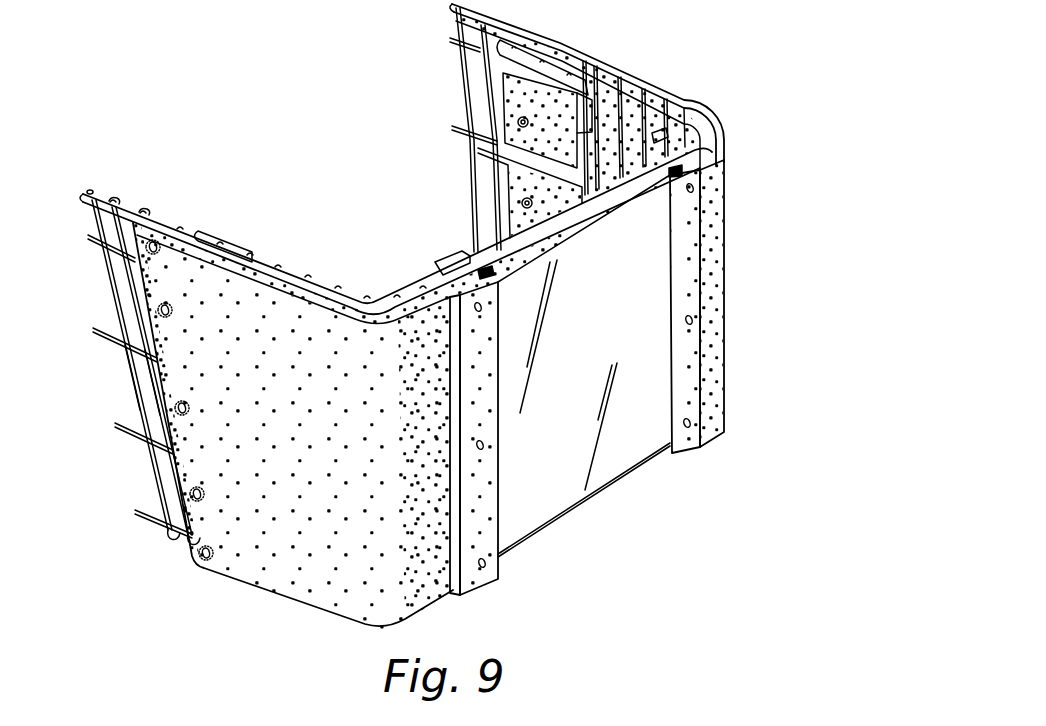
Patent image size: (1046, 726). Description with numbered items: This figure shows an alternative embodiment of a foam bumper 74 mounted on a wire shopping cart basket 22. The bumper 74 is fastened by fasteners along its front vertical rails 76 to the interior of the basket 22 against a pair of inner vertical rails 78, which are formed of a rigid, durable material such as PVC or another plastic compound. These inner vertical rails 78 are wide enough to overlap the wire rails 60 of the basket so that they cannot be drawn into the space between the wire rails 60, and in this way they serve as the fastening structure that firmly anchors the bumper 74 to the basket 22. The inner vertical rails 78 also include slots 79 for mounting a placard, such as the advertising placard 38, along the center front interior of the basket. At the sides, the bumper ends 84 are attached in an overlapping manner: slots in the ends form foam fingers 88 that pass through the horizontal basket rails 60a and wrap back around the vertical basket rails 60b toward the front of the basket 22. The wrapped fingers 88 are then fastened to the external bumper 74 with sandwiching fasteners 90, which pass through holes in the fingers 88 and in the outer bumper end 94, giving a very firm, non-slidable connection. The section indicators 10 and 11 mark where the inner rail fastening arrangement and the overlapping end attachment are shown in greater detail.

The shopping cart basket 22 is at (86, 185).
The advertising placard 38 is at (617, 442).
The wire rails 60 is at (172, 538).
The horizontal basket rails 60a is at (122, 425).
The vertical basket rails 60b is at (179, 227).
The bumper 74 is at (306, 611).
The front vertical rails 76 is at (488, 572).
The inner vertical rails 78 is at (457, 253).
The slots 79 is at (484, 276).
The bumper ends 84 is at (497, 95).
The fingers 88 is at (238, 246).
The sandwiching fasteners 90 is at (160, 313).
The outer bumper end 94 is at (183, 470).
The section line 10- 10 is at (418, 276).
The section line 11- 11 is at (133, 262).